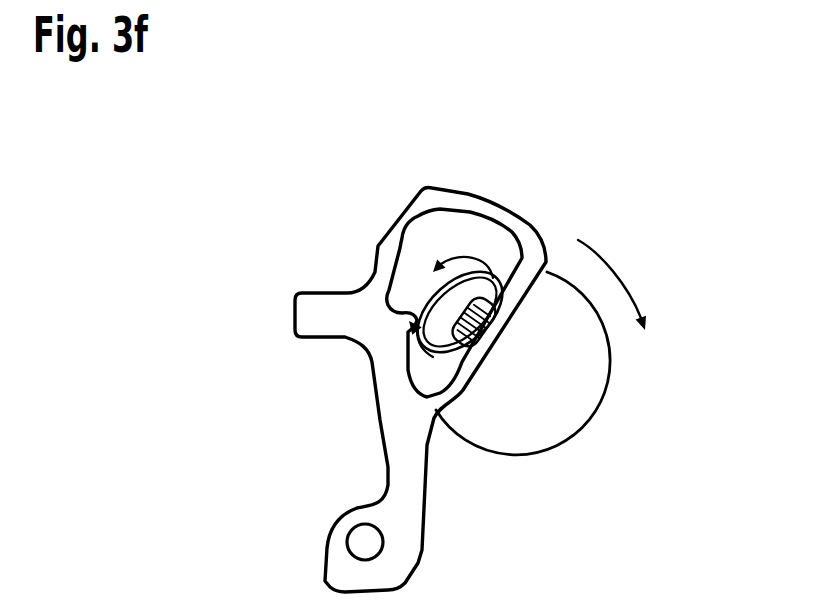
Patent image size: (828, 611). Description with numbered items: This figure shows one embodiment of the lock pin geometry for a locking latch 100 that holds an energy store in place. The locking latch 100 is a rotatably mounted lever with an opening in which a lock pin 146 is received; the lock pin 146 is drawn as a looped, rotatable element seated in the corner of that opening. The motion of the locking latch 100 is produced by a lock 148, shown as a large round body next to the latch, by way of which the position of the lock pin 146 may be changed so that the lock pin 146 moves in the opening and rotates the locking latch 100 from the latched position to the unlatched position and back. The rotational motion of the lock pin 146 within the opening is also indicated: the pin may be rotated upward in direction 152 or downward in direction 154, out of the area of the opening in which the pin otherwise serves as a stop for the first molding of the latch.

The locking latch 100 is at (433, 198).
The upward rotation direction 152 is at (492, 240).
The lock pin 146 is at (468, 316).
The lock 148 is at (587, 358).
The downward rotation direction 154 is at (612, 267).